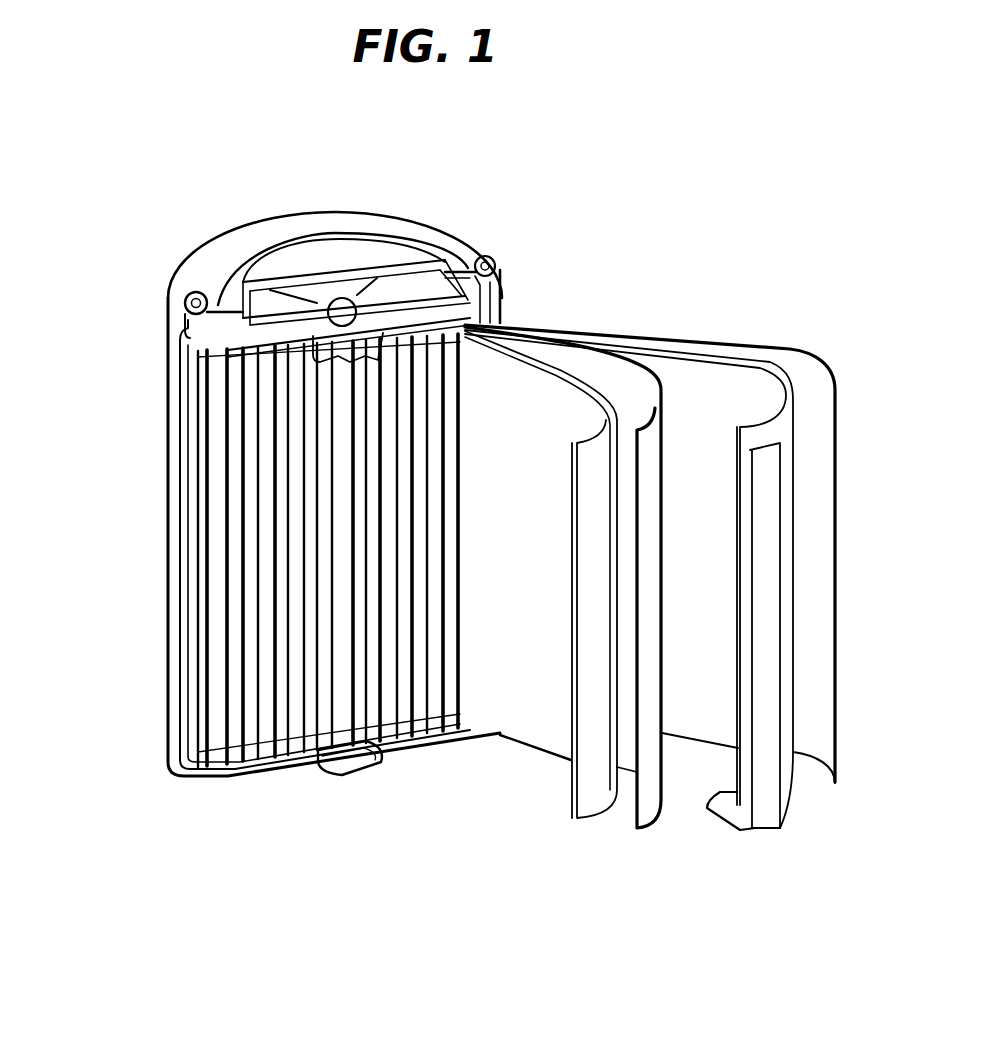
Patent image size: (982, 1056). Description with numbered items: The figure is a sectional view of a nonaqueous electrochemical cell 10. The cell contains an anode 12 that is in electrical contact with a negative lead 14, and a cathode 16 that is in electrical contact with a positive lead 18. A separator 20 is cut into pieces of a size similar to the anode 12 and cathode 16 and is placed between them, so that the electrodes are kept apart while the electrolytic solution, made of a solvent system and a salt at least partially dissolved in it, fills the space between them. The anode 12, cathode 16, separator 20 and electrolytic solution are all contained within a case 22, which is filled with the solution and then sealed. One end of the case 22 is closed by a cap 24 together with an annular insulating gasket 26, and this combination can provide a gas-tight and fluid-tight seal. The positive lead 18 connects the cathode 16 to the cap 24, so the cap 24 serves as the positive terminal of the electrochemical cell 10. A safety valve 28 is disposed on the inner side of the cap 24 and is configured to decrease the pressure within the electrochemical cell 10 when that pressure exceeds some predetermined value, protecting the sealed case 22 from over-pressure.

The electrochemical cell 10 is at (714, 222).
The anode 12 is at (789, 764).
The negative lead 14 is at (763, 809).
The cathode 16 is at (594, 804).
The positive lead 18 is at (358, 326).
The separator 20 is at (657, 438).
The case 22 is at (187, 781).
The cap 24 is at (327, 252).
The annular insulating gasket 26 is at (186, 299).
The safety valve 28 is at (399, 291).